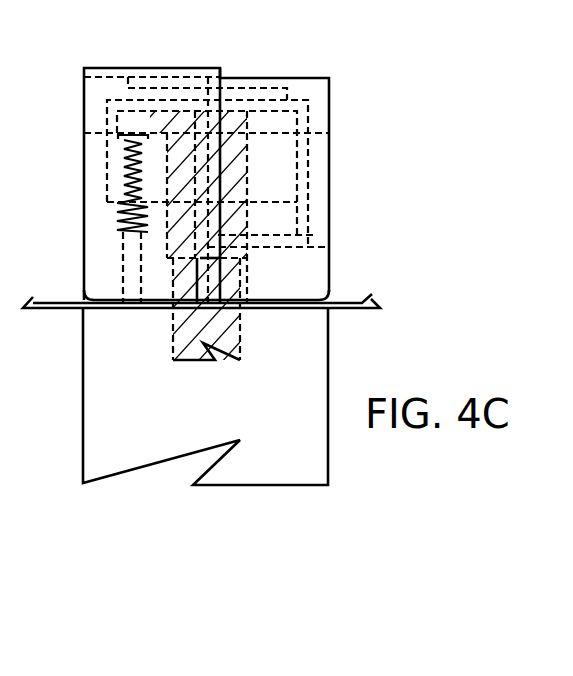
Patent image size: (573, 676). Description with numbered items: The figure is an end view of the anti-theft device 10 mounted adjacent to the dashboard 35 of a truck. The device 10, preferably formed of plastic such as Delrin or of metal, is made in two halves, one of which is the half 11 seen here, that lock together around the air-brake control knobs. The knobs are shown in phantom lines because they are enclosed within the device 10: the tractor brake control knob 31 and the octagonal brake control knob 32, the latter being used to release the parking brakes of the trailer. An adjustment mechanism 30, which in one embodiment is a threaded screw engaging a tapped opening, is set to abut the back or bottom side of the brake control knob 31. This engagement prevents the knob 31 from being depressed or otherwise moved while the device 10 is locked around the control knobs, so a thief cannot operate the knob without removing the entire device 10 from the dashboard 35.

The anti-theft device 10 is at (316, 51).
The half 11 is at (220, 70).
The adjustment mechanism 30 is at (118, 180).
The brake control knob 31 is at (268, 137).
The brake control knob 32 is at (135, 258).
The dashboard 35 is at (352, 297).